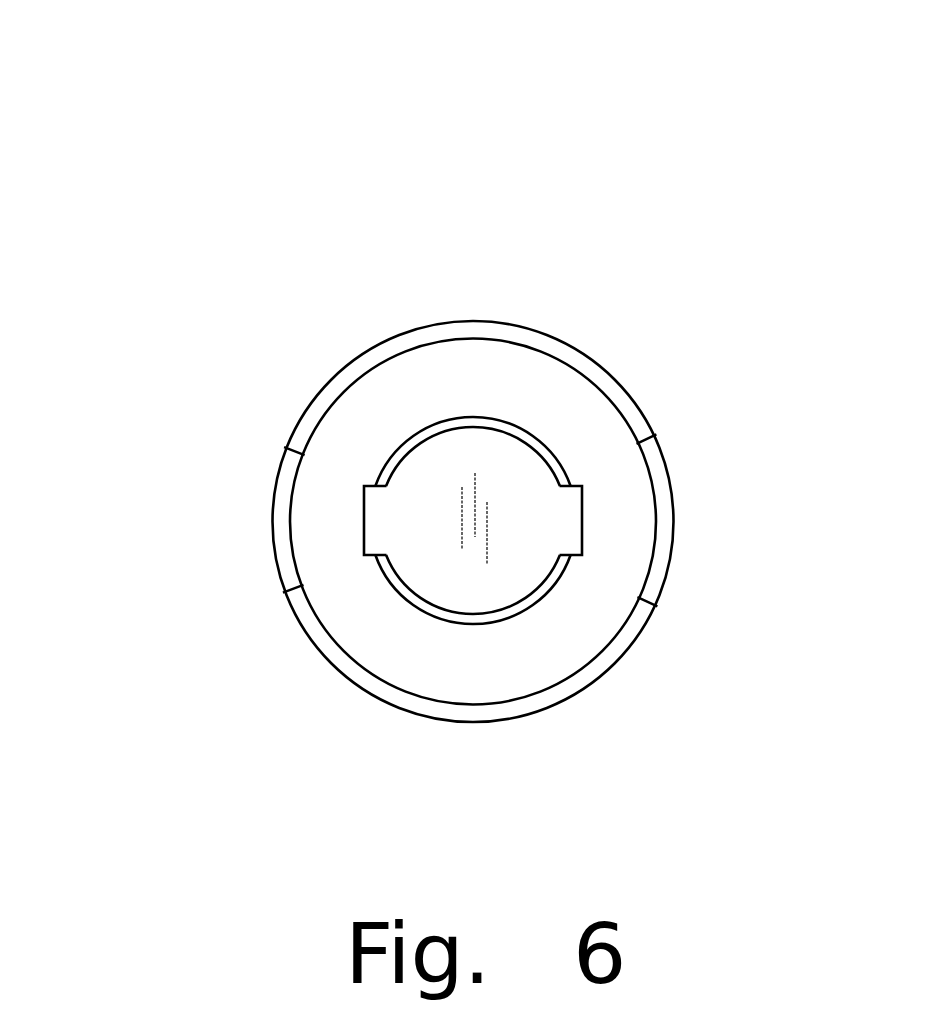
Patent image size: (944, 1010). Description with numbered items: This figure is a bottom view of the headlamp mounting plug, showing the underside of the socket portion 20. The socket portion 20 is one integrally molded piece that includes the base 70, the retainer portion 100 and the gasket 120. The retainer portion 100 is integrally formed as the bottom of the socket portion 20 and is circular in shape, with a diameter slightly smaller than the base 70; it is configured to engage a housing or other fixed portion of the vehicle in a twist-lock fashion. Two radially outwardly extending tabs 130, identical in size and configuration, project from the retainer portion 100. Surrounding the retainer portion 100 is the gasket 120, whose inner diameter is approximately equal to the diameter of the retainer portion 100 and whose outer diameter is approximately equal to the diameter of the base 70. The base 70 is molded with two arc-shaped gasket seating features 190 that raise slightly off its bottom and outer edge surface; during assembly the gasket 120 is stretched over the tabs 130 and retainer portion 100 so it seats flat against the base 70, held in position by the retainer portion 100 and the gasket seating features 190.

The socket portion 20 is at (180, 124).
The base 70 is at (672, 468).
The gasket seating features 190 is at (524, 338).
The gasket 120 is at (310, 527).
The retainer portion 100 is at (415, 473).
The tabs 130 is at (382, 508).